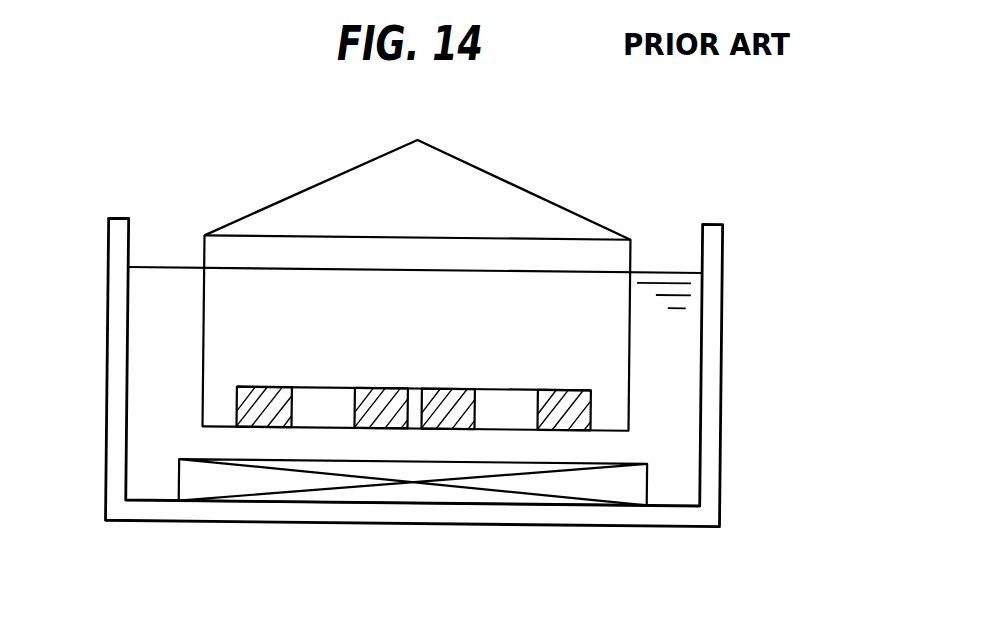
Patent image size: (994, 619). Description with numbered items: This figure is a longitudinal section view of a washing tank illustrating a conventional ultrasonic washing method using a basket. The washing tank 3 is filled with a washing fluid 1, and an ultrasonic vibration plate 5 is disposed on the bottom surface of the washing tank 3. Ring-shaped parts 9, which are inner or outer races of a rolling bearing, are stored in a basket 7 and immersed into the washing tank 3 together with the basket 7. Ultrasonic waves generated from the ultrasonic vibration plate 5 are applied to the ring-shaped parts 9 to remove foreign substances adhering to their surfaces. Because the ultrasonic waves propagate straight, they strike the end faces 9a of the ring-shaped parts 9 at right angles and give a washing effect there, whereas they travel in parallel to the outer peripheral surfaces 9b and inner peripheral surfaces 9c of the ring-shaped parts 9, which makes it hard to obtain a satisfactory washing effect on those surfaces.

The washing fluid 1 is at (668, 276).
The washing tank 3 is at (722, 405).
The ultrasonic vibration plate 5 is at (648, 481).
The basket 7 is at (630, 346).
The ring-shaped parts 9 is at (488, 382).
The end faces 9a is at (257, 429).
The outer peripheral surfaces 9b is at (238, 406).
The inner peripheral surfaces 9c is at (291, 406).